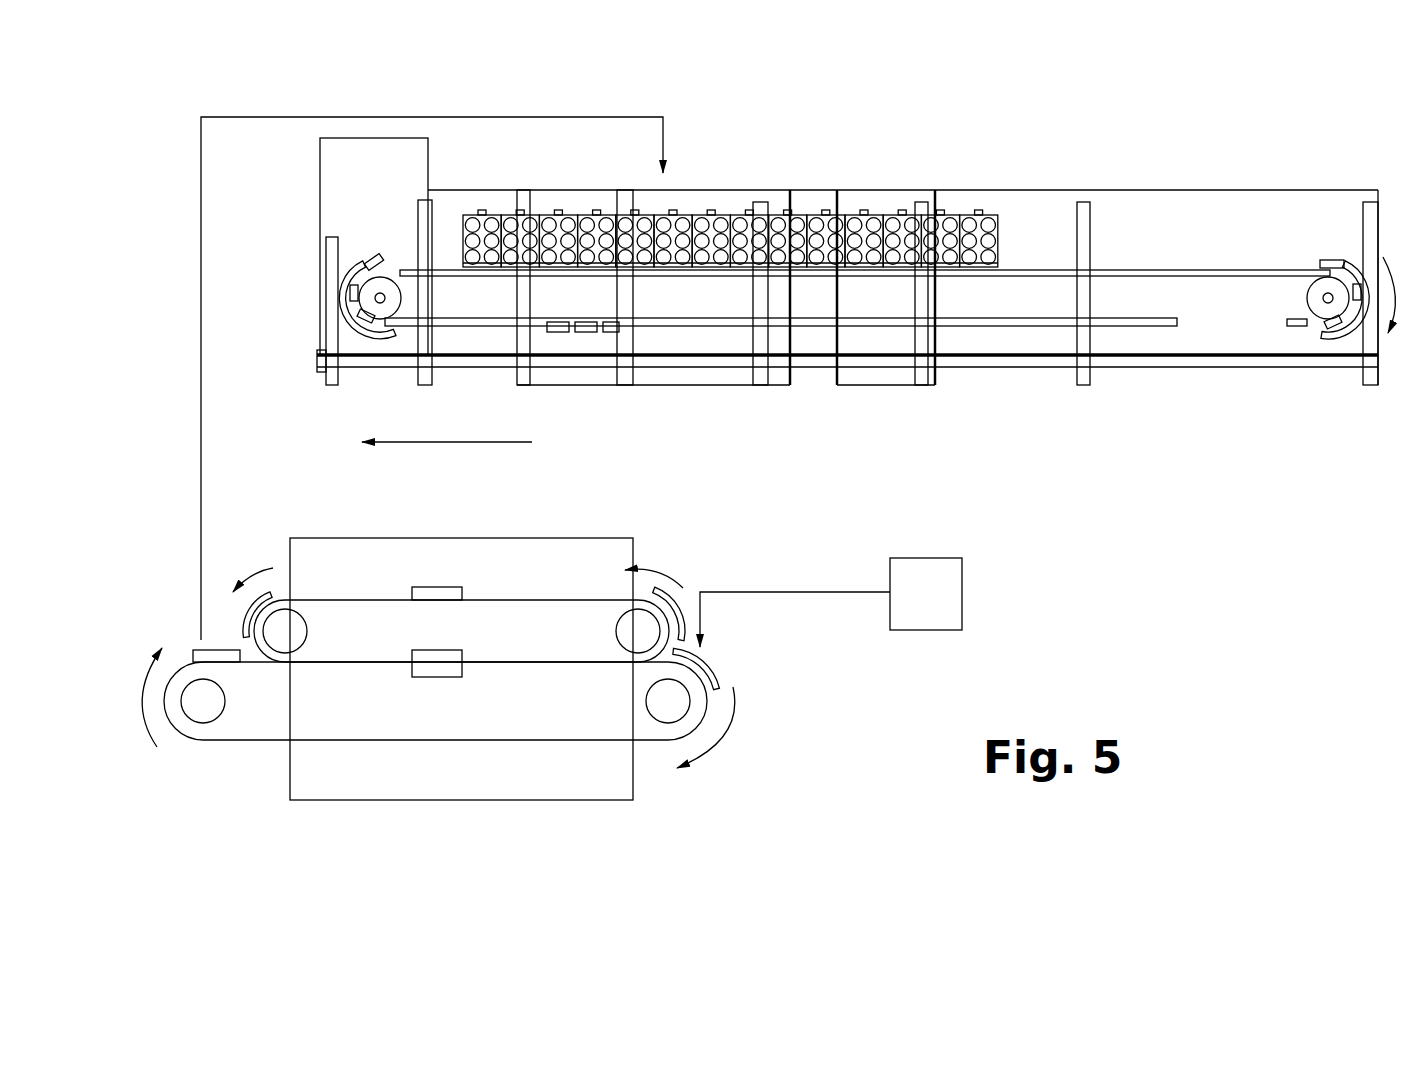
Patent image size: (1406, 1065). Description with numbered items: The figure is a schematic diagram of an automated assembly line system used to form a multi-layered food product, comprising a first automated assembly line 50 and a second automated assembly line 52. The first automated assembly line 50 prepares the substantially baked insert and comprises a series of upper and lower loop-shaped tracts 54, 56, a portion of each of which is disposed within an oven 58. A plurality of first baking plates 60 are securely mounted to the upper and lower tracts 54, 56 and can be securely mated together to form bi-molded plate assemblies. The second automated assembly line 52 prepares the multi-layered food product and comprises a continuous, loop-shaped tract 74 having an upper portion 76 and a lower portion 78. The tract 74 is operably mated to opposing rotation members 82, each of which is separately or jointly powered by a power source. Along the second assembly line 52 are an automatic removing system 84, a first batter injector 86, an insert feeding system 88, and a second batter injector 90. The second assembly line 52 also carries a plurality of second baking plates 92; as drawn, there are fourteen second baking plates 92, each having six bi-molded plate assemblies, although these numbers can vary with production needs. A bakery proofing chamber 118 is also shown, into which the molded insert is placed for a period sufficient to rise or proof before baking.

The first automated assembly line 50 is at (742, 780).
The second automated assembly line 52 is at (522, 105).
The upper loop-shaped tract 54 is at (257, 553).
The lower loop-shaped tract 56 is at (210, 750).
The oven 58 is at (463, 815).
The first baking plates 60 is at (688, 603).
The loop-shaped tract 74 is at (450, 215).
The upper portion 76 is at (395, 212).
The lower portion 78 is at (452, 455).
The rotation members 82 is at (315, 299).
The automatic removing system 84 is at (358, 338).
The first batter injector 86 is at (571, 387).
The insert feeding system 88 is at (717, 387).
The second batter injector 90 is at (884, 387).
The second baking plates 92 is at (674, 207).
The bakery proofing chamber 118 is at (942, 552).